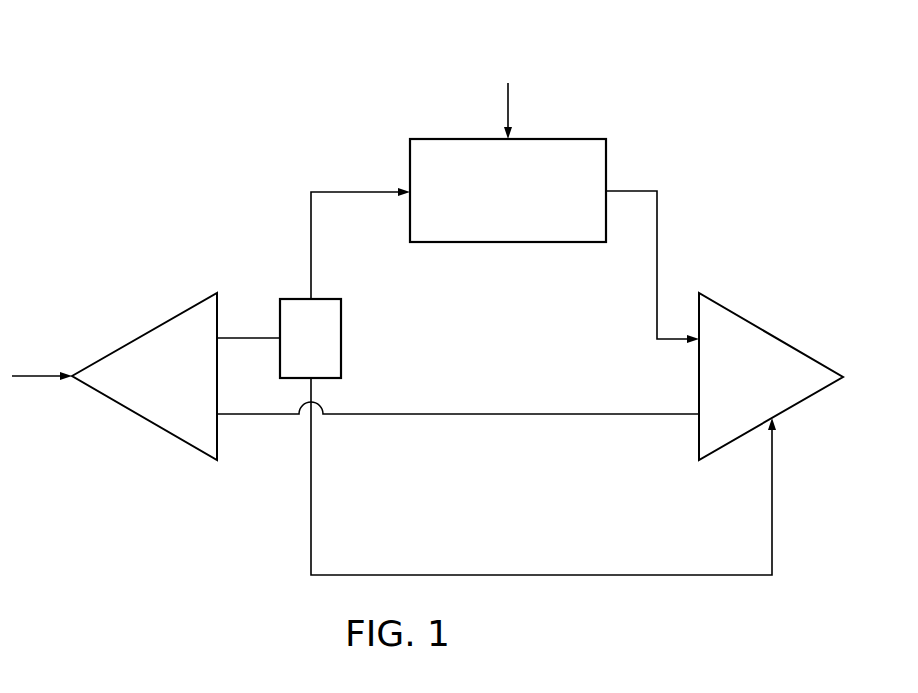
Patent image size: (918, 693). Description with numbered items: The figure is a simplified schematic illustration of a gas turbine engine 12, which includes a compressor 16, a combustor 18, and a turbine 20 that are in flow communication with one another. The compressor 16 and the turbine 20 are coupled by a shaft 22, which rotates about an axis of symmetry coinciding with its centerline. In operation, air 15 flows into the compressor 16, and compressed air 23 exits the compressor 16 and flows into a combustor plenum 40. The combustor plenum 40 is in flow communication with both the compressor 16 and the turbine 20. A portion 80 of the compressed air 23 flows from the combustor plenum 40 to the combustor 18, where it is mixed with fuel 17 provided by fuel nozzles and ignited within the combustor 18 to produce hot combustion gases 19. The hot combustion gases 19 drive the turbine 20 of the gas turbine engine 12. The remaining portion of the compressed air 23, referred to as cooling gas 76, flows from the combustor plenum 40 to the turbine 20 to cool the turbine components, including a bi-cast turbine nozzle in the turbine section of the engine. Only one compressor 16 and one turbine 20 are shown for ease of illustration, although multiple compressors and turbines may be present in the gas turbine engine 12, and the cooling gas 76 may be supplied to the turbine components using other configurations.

The gas turbine engine 12 is at (176, 189).
The air 15 is at (34, 376).
The compressor 16 is at (152, 330).
The fuel 17 is at (508, 101).
The combustor 18 is at (608, 158).
The hot combustion gases 19 is at (657, 216).
The turbine 20 is at (762, 330).
The shaft 22 is at (538, 413).
The compressed air 23 is at (262, 338).
The combustor plenum 40 is at (343, 336).
The cooling gas 76 is at (514, 575).
The portion of compressed air 80 is at (311, 215).